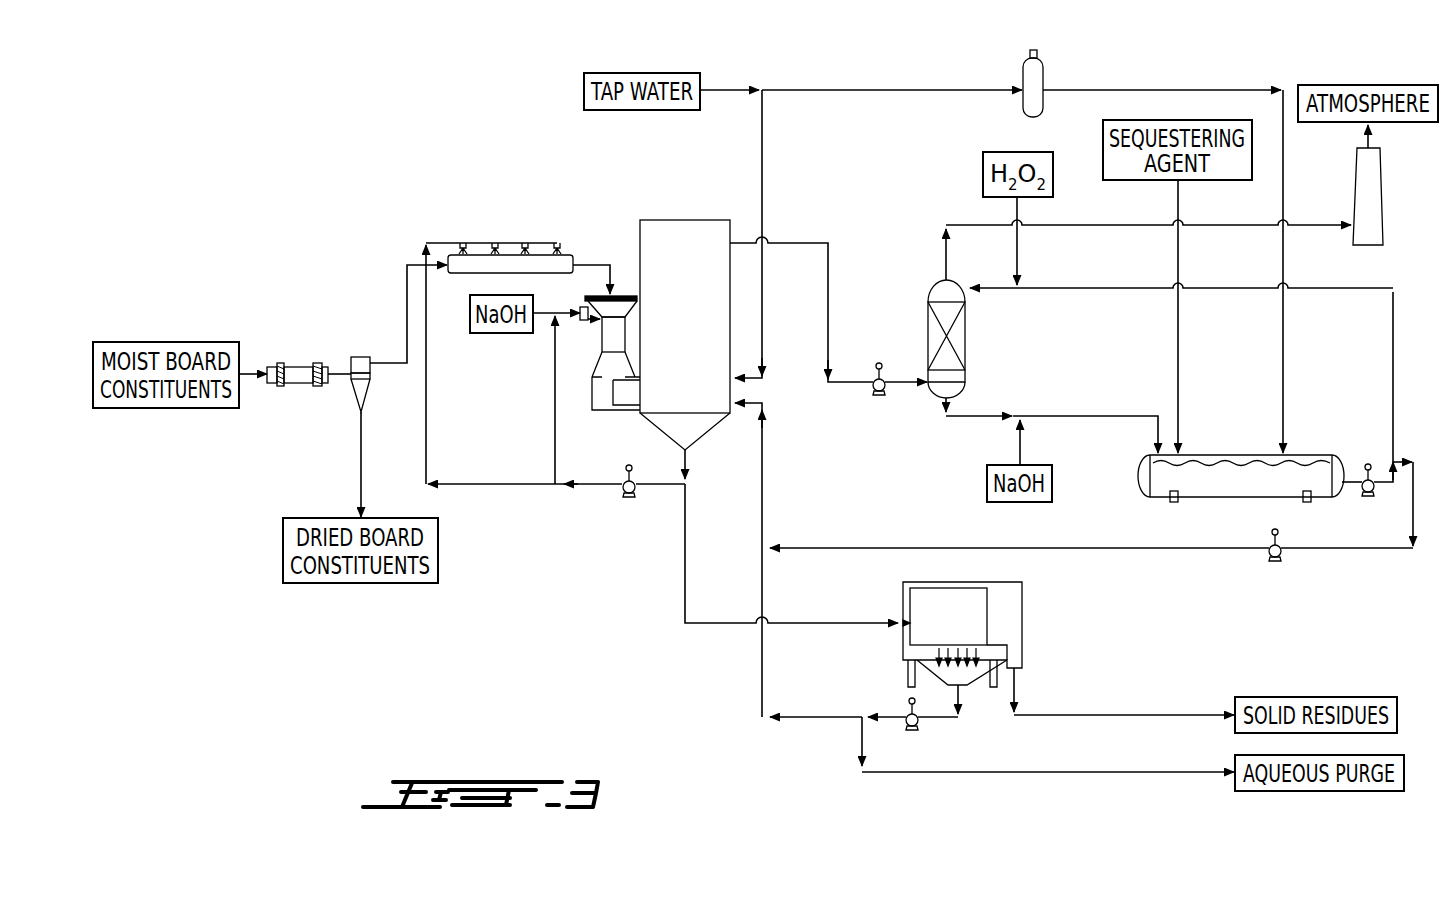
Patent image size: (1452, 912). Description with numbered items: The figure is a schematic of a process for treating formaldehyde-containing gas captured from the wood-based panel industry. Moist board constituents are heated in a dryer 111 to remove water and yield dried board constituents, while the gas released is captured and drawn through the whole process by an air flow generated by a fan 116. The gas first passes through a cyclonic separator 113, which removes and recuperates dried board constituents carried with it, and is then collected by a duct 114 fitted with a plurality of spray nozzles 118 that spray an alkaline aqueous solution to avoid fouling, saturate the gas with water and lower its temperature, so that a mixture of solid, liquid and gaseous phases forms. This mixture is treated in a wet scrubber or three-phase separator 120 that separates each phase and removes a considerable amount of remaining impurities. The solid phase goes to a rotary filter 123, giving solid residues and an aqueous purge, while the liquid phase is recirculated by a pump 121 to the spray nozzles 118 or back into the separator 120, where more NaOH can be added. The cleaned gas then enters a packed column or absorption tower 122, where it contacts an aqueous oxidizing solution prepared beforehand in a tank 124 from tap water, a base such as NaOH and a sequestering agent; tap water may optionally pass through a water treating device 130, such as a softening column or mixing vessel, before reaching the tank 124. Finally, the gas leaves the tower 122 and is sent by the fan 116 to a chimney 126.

The dryer 111 is at (297, 361).
The cyclonic separator 113 is at (359, 355).
The duct 114 is at (548, 268).
The fan 116 is at (879, 395).
The spray nozzles 118 is at (463, 243).
The wet scrubber or three-phase separator 120 is at (686, 211).
The pump 121 is at (624, 495).
The packed column or absorption tower 122 is at (940, 290).
The rotary filter 123 is at (1032, 592).
The tank 124 is at (1233, 490).
The chimney 126 is at (1367, 182).
The water treating device 130 is at (1032, 78).